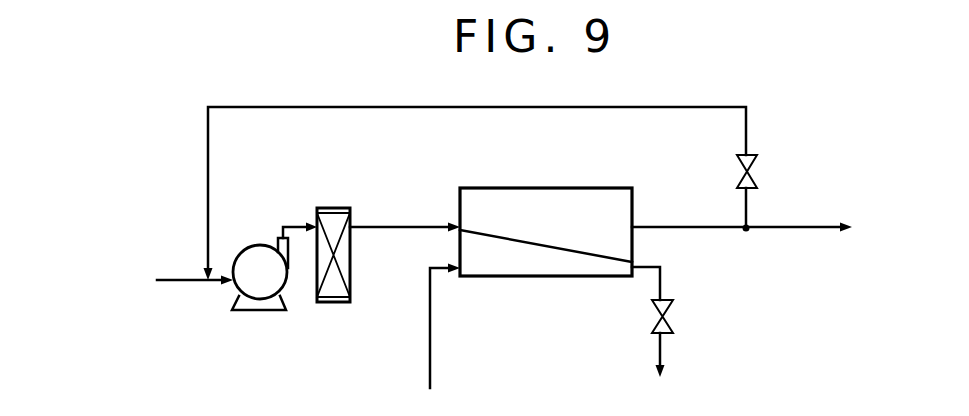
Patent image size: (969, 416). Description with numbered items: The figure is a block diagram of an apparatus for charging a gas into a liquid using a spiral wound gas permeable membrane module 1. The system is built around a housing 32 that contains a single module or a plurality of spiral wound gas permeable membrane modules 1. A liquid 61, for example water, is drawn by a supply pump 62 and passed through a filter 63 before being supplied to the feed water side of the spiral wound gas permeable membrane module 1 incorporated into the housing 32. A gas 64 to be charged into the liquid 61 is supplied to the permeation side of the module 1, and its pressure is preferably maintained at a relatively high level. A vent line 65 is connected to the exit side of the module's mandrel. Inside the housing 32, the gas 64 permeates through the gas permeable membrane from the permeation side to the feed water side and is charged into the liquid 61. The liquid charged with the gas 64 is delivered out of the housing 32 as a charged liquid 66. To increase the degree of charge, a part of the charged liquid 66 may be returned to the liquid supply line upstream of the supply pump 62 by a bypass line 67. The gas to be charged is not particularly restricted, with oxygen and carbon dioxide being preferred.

The spiral wound gas permeable membrane module 1 is at (562, 197).
The housing 32 is at (537, 278).
The liquid 61 is at (182, 278).
The supply pump 62 is at (258, 244).
The filter 63 is at (334, 207).
The gas 64 is at (432, 371).
The vent line 65 is at (664, 290).
The charged liquid 66 is at (828, 225).
The bypass line 67 is at (727, 105).